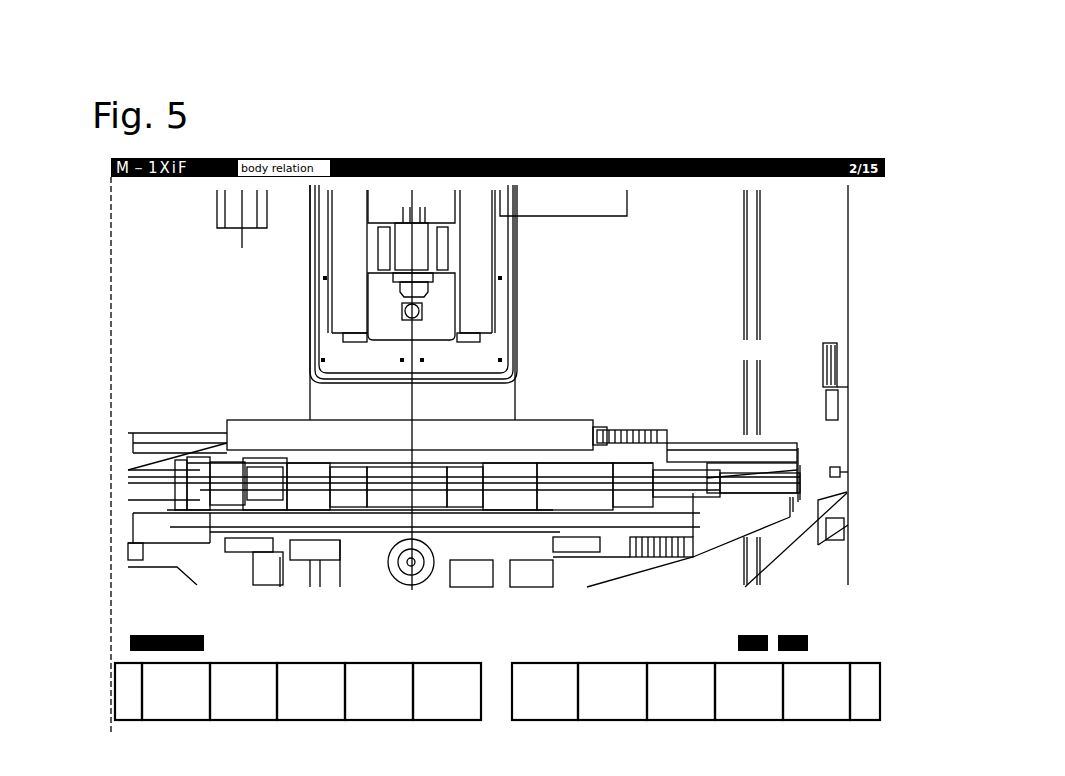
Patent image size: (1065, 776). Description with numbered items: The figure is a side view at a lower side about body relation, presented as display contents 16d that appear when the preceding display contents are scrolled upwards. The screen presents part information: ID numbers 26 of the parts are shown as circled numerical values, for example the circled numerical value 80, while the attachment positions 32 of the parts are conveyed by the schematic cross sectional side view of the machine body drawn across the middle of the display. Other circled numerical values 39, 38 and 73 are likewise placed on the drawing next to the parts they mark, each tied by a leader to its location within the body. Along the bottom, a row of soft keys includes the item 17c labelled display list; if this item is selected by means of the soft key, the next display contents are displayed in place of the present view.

The ID numbers 26 is at (140, 243).
The circled numerical value 80 is at (318, 315).
The attachment positions 32 is at (668, 205).
The display contents 16d is at (803, 205).
The component 39 is at (739, 387).
The component 38 is at (655, 525).
The table component 73 is at (605, 415).
The item of display list 17c is at (133, 695).